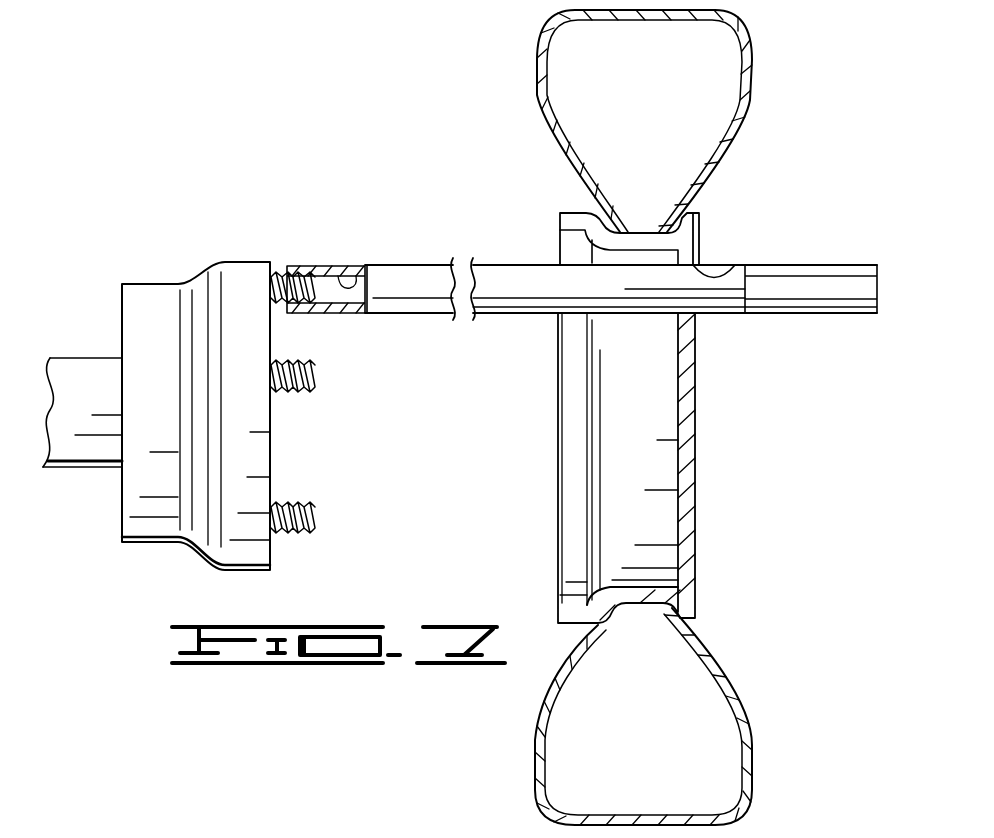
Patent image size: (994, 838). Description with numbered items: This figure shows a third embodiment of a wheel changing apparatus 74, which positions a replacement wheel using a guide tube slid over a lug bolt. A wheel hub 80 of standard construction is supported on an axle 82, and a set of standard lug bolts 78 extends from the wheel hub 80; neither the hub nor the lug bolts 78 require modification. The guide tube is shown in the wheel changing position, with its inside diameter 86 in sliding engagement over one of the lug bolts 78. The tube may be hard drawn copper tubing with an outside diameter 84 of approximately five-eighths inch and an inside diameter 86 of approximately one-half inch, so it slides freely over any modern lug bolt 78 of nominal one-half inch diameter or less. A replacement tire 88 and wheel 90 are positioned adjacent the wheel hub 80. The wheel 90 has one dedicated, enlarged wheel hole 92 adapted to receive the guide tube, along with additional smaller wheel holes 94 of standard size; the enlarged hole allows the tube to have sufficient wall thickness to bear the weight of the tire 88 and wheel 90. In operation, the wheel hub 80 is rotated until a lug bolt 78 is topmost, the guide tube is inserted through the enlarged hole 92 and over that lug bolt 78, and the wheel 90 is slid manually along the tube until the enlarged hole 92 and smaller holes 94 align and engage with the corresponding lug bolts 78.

The wheel changing apparatus 74 is at (318, 182).
The lug bolts 78 is at (285, 272).
The wheel hub 80 is at (250, 347).
The axle 82 is at (92, 458).
The outside diameter 84 is at (535, 263).
The inside diameter 86 is at (345, 278).
The replacement tire 88 is at (750, 62).
The wheel 90 is at (697, 465).
The enlarged wheel hole 92 is at (735, 265).
The smaller wheel holes 94 is at (695, 371).